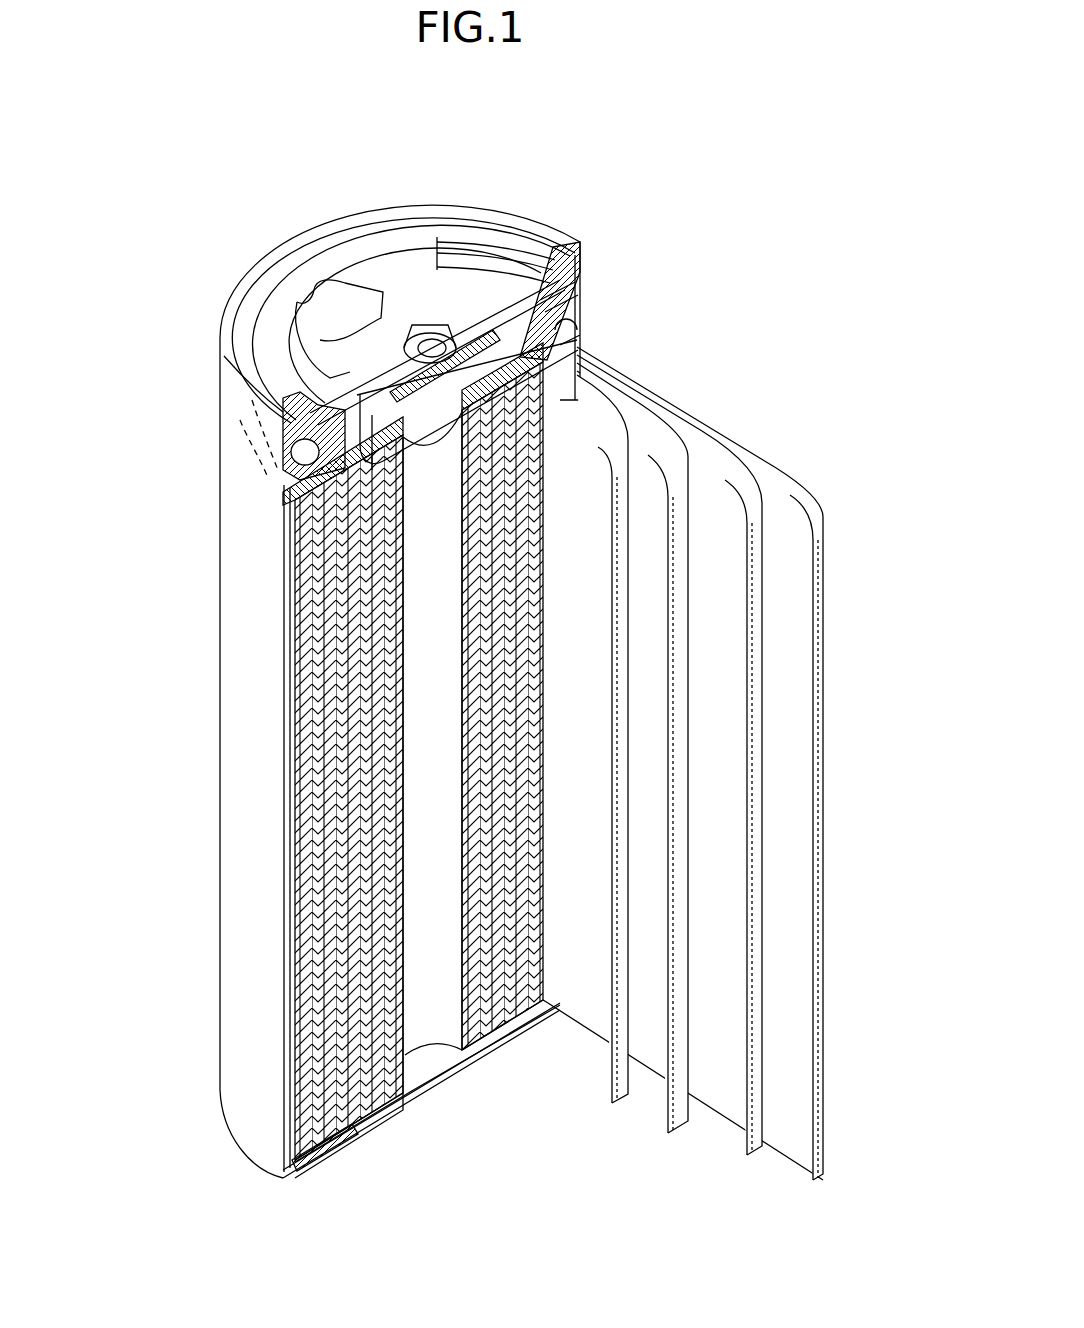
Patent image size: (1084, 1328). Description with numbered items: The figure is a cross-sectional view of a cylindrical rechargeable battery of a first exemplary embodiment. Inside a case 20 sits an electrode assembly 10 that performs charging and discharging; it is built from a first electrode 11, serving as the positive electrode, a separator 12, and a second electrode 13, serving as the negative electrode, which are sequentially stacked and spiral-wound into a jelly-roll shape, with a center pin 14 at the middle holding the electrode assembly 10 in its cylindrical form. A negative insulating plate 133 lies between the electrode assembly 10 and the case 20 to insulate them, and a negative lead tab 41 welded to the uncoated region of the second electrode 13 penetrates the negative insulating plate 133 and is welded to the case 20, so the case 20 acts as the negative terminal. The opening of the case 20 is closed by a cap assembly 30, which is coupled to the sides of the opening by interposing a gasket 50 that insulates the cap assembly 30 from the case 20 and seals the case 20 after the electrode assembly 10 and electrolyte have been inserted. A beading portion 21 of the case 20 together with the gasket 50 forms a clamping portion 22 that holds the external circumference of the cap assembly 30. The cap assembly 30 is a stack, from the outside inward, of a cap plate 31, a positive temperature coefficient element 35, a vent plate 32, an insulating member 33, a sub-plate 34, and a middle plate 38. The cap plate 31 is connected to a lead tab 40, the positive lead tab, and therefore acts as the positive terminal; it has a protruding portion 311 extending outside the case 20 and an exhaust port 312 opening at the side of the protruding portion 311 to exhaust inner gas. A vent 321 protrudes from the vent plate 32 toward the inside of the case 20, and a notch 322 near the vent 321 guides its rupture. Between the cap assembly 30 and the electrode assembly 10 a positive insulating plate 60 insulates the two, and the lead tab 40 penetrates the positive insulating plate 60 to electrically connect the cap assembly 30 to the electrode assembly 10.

The electrode assembly 10 is at (318, 910).
The first electrode 11 is at (747, 467).
The separator 12 is at (812, 493).
The second electrode 13 is at (608, 1072).
The center pin 14 is at (427, 1030).
The negative insulating plate 133 is at (367, 1120).
The case 20 is at (237, 690).
The beading portion 21 is at (298, 455).
The clamping portion 22 is at (250, 400).
The cap assembly 30 is at (268, 333).
The cap plate 31 is at (473, 250).
The protruding portion 311 is at (360, 263).
The exhaust port 312 is at (313, 293).
The vent plate 32 is at (563, 262).
The vent 321 is at (425, 345).
The notch 322 is at (447, 340).
The insulating member 33 is at (507, 287).
The sub-plate 34 is at (580, 337).
The positive temperature coefficient (PTC) element 35 is at (562, 255).
The middle plate 38 is at (572, 320).
The lead tab 40 is at (477, 410).
The negative lead tab 41 is at (313, 1148).
The gasket 50 is at (576, 283).
The positive insulating plate 60 is at (293, 480).